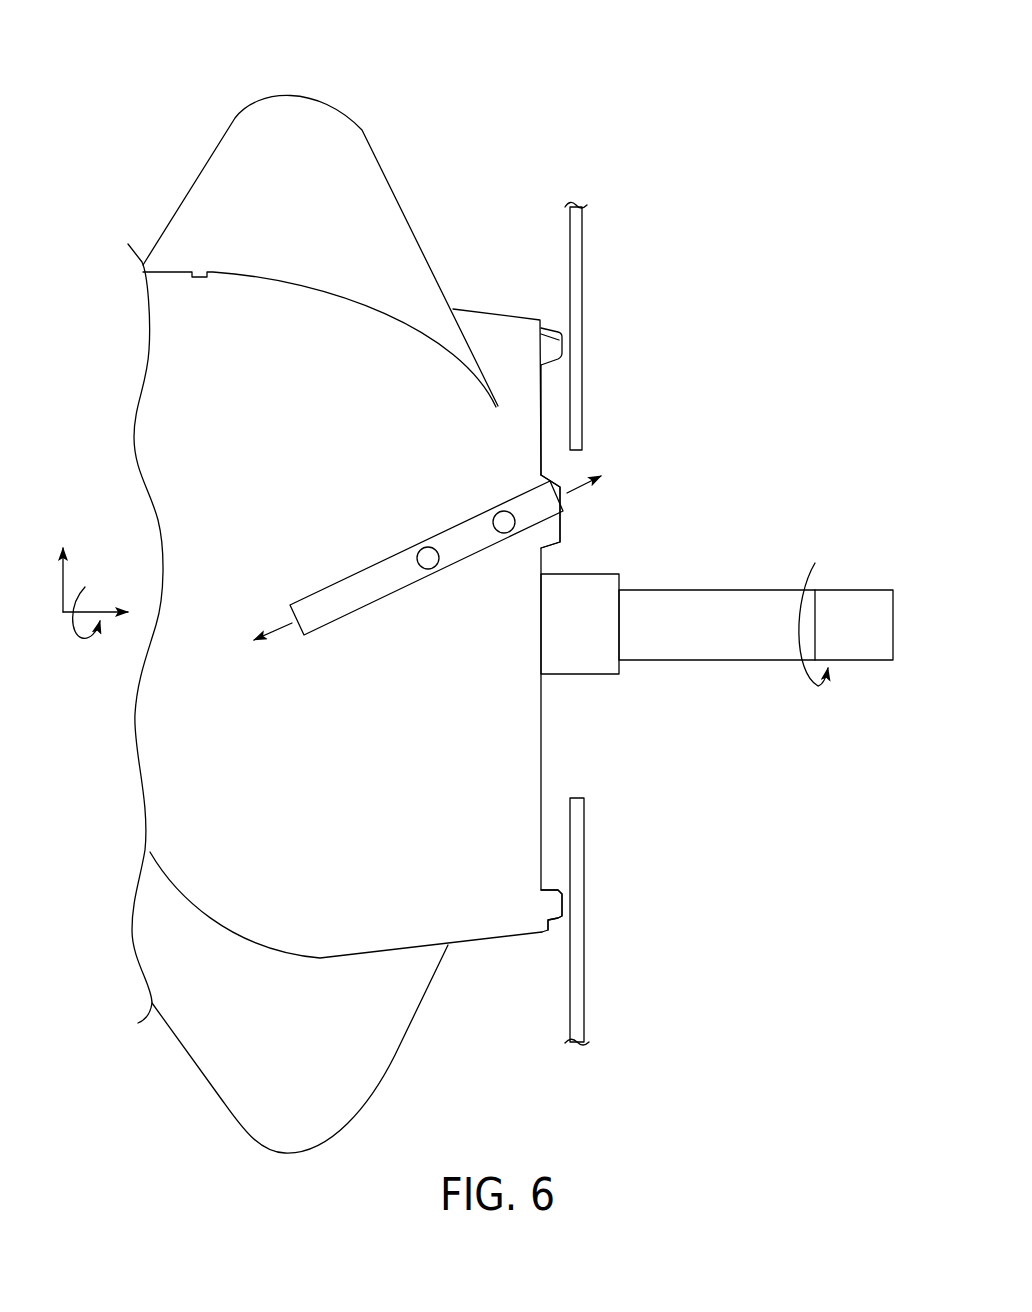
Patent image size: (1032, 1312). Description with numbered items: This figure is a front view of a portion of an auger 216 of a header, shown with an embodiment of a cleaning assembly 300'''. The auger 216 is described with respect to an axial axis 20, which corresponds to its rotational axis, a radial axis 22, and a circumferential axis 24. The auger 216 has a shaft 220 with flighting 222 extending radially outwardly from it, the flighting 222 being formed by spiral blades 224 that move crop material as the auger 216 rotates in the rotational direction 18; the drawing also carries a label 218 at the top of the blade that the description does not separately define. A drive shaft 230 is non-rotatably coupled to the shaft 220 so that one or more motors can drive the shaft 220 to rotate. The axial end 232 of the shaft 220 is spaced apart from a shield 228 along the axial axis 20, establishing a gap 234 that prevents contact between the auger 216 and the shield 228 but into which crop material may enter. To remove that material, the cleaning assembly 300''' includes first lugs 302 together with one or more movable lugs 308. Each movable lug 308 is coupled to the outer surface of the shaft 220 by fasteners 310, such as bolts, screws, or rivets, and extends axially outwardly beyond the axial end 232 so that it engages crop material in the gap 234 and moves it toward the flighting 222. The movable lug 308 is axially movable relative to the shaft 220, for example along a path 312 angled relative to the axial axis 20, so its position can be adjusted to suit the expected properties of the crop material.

The auger 216 is at (301, 207).
The airfoil 218 is at (301, 207).
The flighting 222 is at (185, 141).
The spiral blades 224 is at (192, 178).
The shaft 220 is at (497, 325).
The shield 228 is at (568, 285).
The axial end 232 is at (541, 397).
The gap 234 is at (550, 430).
The drive shaft 230 is at (747, 605).
The rotational direction 18 is at (800, 630).
The first lugs 302 is at (550, 537).
The movable lug 308 is at (458, 535).
The fasteners 310 is at (503, 532).
The path 312 is at (580, 492).
The cleaning assembly 300''' is at (613, 960).
The radial axis 22 is at (65, 585).
The axial axis 20 is at (88, 612).
The circumferential axis 24 is at (75, 613).